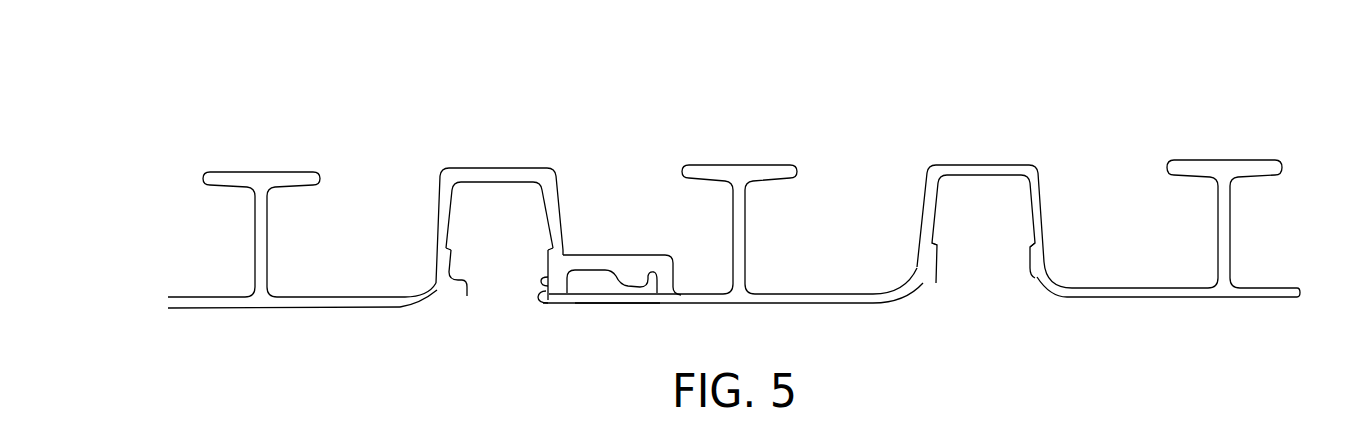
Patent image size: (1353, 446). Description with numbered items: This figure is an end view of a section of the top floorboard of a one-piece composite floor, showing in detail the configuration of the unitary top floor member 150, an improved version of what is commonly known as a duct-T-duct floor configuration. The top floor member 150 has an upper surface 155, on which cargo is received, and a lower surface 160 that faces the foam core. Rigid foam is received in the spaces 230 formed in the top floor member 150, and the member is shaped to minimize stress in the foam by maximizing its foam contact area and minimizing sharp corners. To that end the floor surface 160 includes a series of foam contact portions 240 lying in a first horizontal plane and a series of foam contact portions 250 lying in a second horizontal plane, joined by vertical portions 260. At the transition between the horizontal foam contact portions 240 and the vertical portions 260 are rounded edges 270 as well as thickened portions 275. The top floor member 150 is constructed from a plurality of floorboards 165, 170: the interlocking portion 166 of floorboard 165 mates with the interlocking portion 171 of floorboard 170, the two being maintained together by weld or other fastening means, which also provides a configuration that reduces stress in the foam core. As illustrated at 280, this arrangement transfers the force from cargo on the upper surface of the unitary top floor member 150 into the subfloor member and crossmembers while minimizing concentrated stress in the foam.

The unitary top floor member 150 is at (338, 116).
The upper surface 155 is at (1085, 287).
The lower surface 160 is at (1187, 298).
The floorboard 165 is at (990, 138).
The interlocking portion 166 is at (598, 301).
The floorboard 170 is at (440, 162).
The interlocking portion 171 is at (593, 255).
The spaces 230 is at (965, 247).
The foam contact portions 240 is at (333, 308).
The foam contact portions 250 is at (505, 183).
The vertical portions 260 is at (450, 233).
The rounded edges 270 is at (443, 291).
The thickened portions 275 is at (467, 296).
The force transfer configuration 280 is at (541, 302).